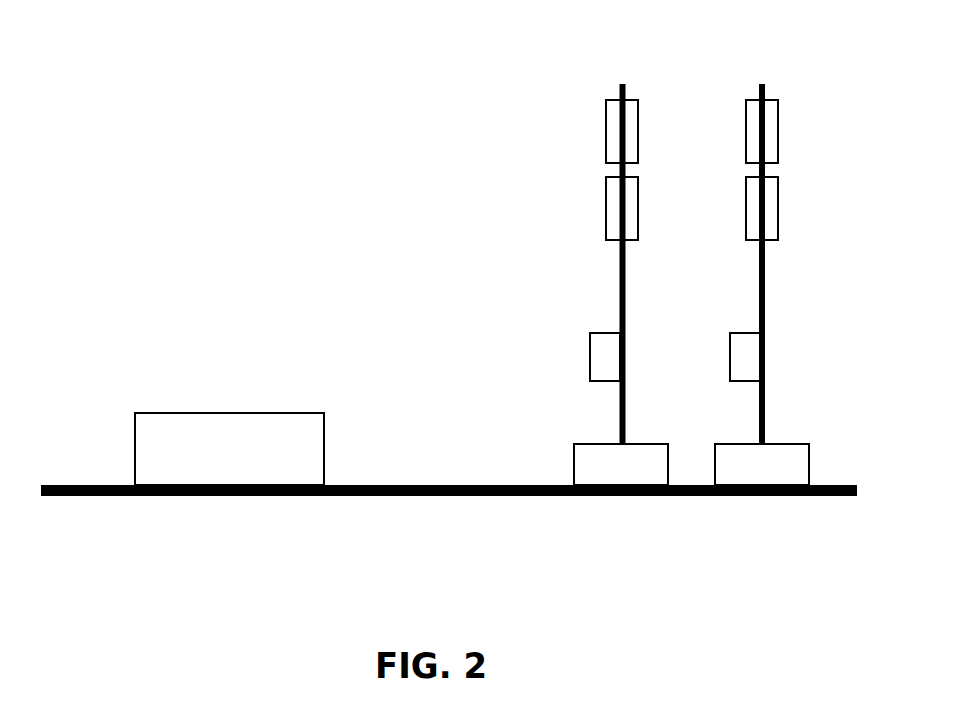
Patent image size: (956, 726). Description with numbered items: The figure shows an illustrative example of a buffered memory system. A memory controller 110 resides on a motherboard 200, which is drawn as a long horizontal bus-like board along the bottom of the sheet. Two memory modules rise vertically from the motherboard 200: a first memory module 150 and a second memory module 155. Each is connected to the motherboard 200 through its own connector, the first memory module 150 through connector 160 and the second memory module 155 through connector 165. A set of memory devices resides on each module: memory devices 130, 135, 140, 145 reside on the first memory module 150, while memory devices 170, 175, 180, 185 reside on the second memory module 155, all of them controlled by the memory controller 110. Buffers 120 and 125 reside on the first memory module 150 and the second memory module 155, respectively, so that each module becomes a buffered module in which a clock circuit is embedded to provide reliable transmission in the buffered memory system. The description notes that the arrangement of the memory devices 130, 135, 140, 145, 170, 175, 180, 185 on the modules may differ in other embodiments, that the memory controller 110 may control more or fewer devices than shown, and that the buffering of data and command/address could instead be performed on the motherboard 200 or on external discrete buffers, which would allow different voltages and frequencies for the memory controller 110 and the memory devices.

The memory controller 110 is at (135, 442).
The motherboard 200 is at (67, 497).
The buffer 120 is at (590, 365).
The buffer 125 is at (730, 367).
The memory device 130 is at (606, 207).
The memory device 135 is at (606, 115).
The memory device 140 is at (638, 210).
The memory device 145 is at (638, 130).
The first memory module 150 is at (625, 427).
The second memory module 155 is at (765, 408).
The connector 160 is at (574, 460).
The connector 165 is at (810, 473).
The memory device 170 is at (745, 227).
The memory device 175 is at (746, 113).
The memory device 180 is at (778, 222).
The memory device 185 is at (778, 130).